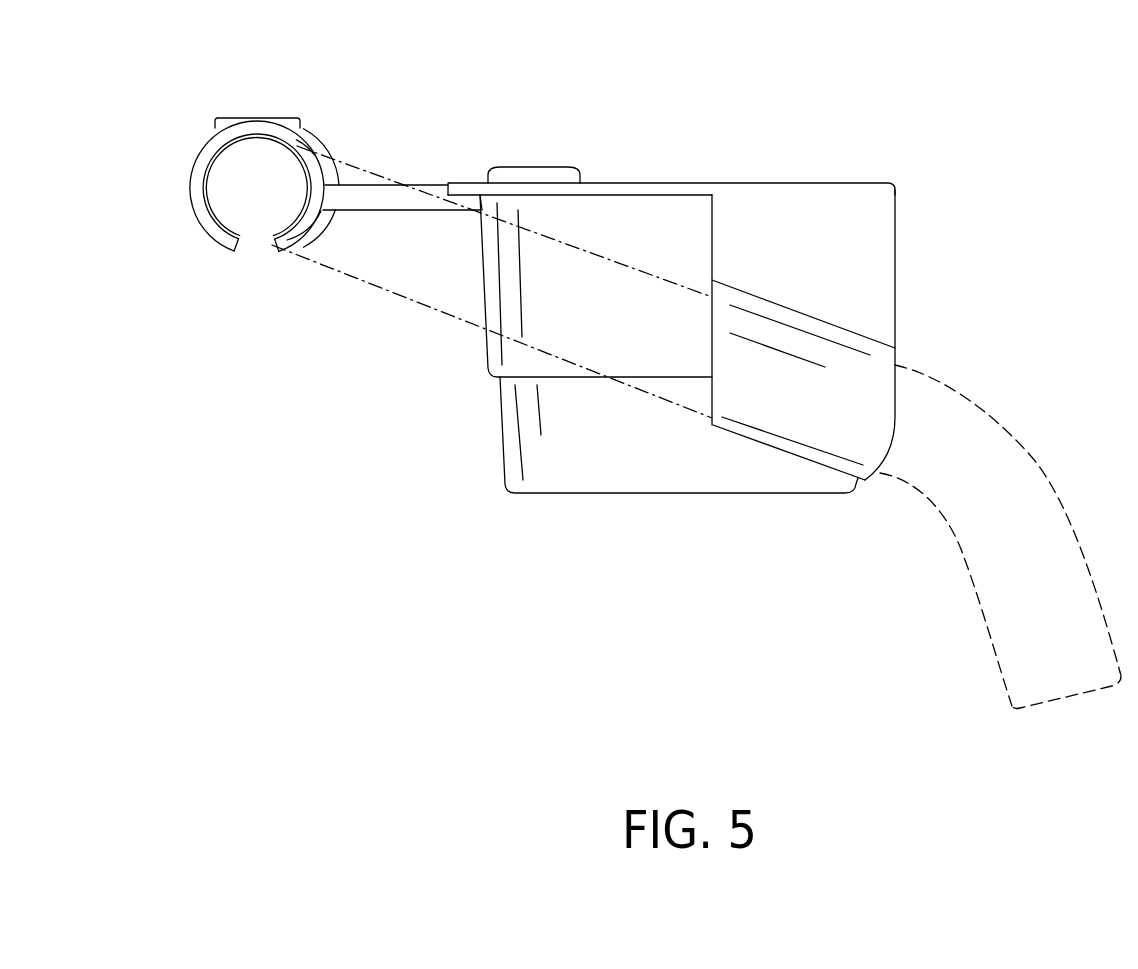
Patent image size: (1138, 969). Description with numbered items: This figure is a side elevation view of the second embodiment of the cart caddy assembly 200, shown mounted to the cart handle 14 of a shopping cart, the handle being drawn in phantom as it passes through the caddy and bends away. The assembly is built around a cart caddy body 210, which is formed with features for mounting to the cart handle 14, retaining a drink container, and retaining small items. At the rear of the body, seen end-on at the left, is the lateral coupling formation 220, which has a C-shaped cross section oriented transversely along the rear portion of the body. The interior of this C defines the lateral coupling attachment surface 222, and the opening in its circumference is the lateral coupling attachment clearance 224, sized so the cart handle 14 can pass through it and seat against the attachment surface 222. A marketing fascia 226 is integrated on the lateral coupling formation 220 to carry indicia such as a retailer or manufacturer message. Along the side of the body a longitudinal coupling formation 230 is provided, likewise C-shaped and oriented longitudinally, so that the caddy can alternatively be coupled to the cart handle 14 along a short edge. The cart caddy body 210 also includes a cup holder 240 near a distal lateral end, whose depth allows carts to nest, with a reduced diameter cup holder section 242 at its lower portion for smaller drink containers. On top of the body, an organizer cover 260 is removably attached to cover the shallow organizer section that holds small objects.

The cart handle 14 is at (387, 250).
The cart caddy assembly 200 is at (926, 132).
The cart caddy body 210 is at (895, 262).
The lateral coupling formation 220 is at (193, 210).
The lateral coupling attachment surface 222 is at (303, 156).
The lateral coupling attachment clearance 224 is at (280, 250).
The marketing fascia 226 is at (228, 118).
The longitudinal coupling formation 230 is at (787, 400).
The cup holder 240 is at (490, 350).
The reduced diameter cup holder section 242 is at (503, 448).
The organizer cover 260 is at (533, 165).